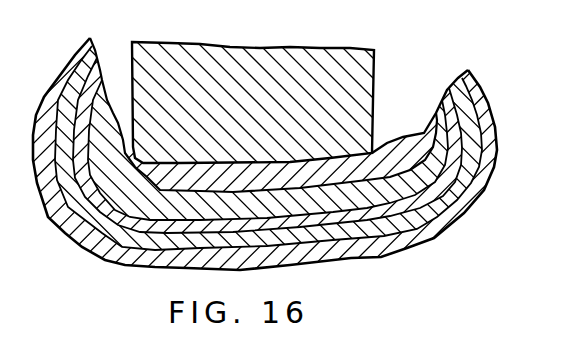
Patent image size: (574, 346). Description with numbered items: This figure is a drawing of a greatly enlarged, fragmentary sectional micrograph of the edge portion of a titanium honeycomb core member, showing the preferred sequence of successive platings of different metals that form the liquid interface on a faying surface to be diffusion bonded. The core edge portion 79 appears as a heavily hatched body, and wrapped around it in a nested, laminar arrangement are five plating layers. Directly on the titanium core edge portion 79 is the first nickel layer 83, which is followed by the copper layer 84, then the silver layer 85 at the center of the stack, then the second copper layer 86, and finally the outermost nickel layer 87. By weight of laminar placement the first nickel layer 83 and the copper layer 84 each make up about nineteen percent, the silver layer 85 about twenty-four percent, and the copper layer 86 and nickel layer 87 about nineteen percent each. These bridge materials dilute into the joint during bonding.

The block 79 is at (378, 50).
The nickel plating layer 83 is at (394, 140).
The copper plating layer 84 is at (454, 117).
The silver plating layer 85 is at (454, 143).
The copper plating layer 86 is at (466, 170).
The nickel plating layer 87 is at (476, 195).